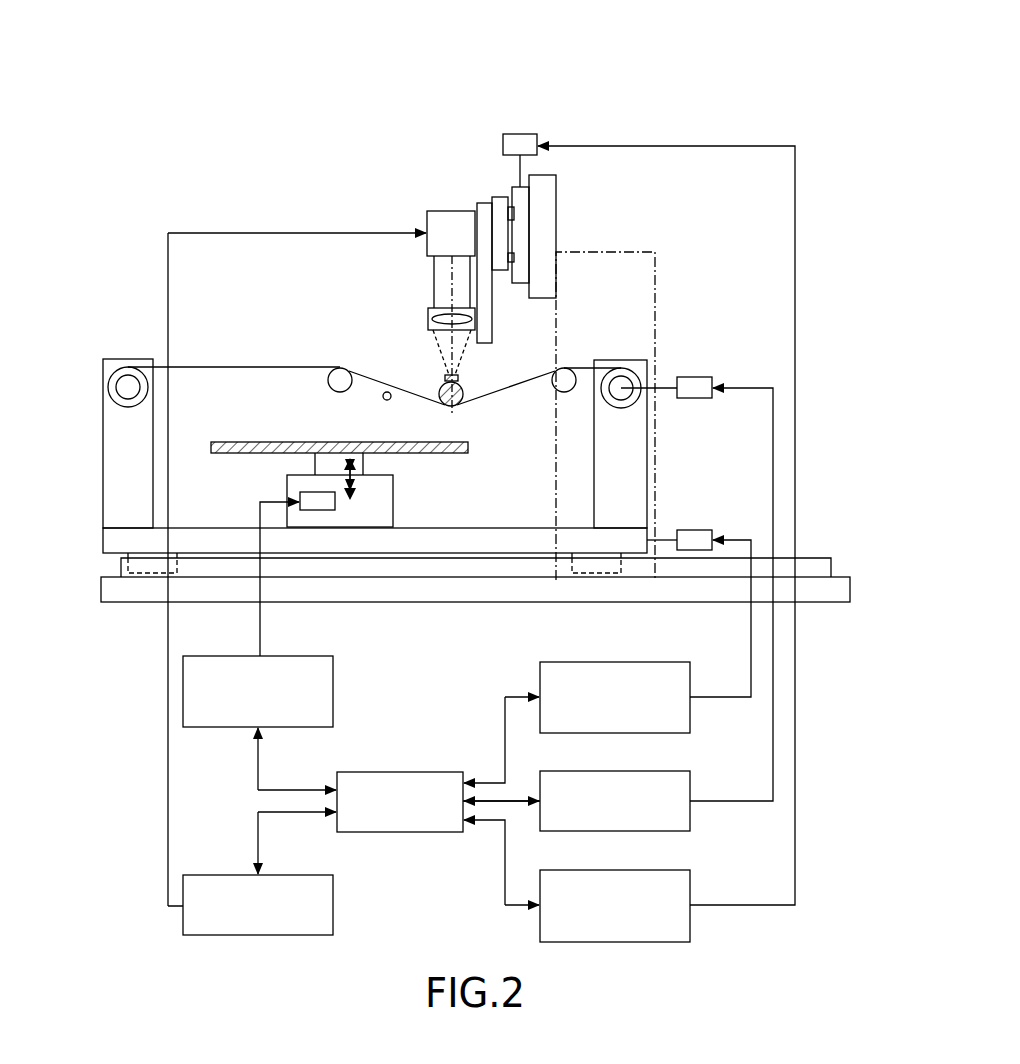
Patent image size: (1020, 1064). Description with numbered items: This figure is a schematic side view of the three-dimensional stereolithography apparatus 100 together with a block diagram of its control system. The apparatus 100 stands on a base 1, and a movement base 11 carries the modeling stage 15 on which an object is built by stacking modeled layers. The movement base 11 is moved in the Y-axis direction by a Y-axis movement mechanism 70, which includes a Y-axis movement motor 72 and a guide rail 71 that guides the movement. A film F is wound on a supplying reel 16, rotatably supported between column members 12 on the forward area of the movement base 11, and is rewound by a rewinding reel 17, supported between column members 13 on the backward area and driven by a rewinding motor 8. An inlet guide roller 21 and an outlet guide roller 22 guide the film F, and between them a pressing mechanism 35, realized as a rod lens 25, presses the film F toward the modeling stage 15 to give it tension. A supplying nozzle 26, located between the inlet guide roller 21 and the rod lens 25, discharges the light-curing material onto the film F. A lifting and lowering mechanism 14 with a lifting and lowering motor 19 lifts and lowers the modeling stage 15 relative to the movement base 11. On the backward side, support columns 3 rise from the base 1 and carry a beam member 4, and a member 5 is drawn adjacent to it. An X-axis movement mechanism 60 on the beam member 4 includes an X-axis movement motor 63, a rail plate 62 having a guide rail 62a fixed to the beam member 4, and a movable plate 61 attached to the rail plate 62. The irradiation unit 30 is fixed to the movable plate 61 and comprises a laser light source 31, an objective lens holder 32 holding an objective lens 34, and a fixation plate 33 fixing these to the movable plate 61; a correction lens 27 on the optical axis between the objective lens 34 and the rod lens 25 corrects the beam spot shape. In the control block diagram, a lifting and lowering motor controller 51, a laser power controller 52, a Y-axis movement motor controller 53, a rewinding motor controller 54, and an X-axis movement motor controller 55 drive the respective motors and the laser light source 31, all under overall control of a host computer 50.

The 3-D stereolithography apparatus 100 is at (372, 66).
The base 1 is at (128, 602).
The support columns 3 is at (656, 300).
The beam member 4 is at (557, 190).
The X-axis moving unit 5 is at (522, 212).
The rewinding motor 8 is at (695, 377).
The movement base 11 is at (103, 541).
The column members 12 is at (103, 362).
The column members 13 is at (640, 458).
The lifting and lowering mechanism 14 is at (393, 498).
The modeling stage 15 is at (469, 447).
The supplying reel 16 is at (130, 368).
The rewinding reel 17 is at (622, 368).
The lifting and lowering motor 19 is at (300, 492).
The inlet guide roller 21 is at (328, 383).
The outlet guide roller 22 is at (565, 368).
The rod lens 25 is at (462, 391).
The supplying nozzle 26 is at (383, 398).
The correction lens 27 is at (460, 378).
The irradiation unit 30 is at (414, 204).
The laser light source 31 is at (452, 220).
The objective lens holder 32 is at (428, 312).
The fixation plate 33 is at (492, 330).
The objective lens 34 is at (434, 321).
The pressing mechanism 35 is at (431, 405).
The host computer 50 is at (401, 772).
The lifting and lowering motor controller 51 is at (334, 668).
The laser power controller 52 is at (334, 888).
The Y-axis movement motor controller 53 is at (691, 677).
The rewinding motor controller 54 is at (691, 784).
The X-axis movement motor controller 55 is at (691, 886).
The X-axis movement mechanism 60 is at (552, 88).
The movable plate 61 is at (492, 205).
The rail plate 62 is at (500, 197).
The guide rail 62a is at (500, 270).
The X-axis movement motor 63 is at (520, 134).
The Y-axis movement mechanism 70 is at (875, 470).
The guide rail 71 is at (815, 557).
The Y-axis movement motor 72 is at (706, 530).
The film F is at (228, 367).